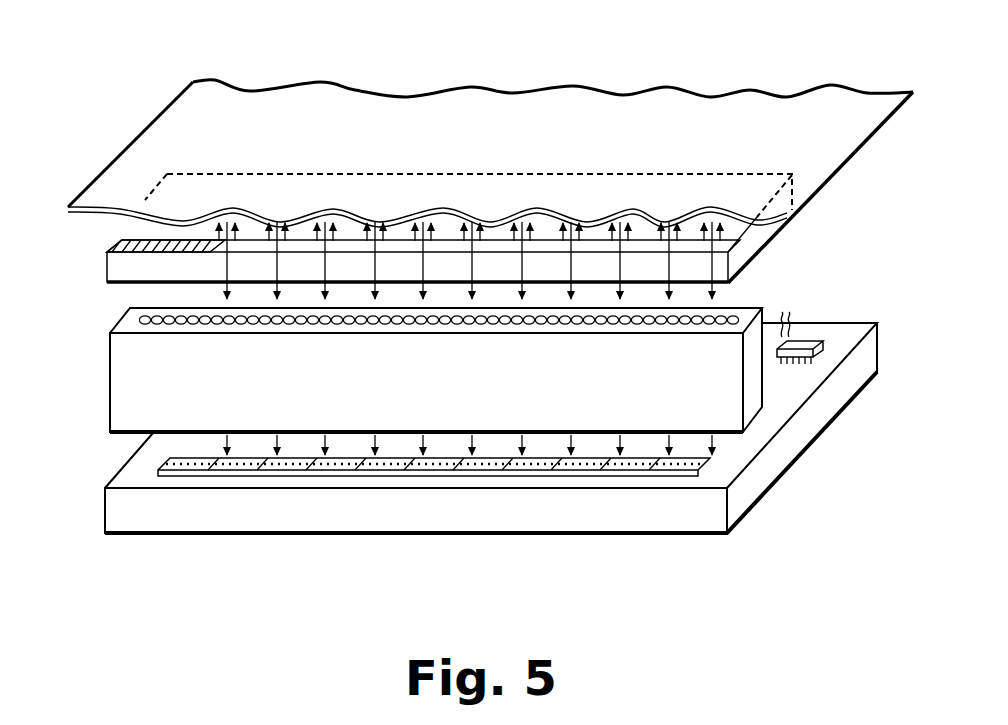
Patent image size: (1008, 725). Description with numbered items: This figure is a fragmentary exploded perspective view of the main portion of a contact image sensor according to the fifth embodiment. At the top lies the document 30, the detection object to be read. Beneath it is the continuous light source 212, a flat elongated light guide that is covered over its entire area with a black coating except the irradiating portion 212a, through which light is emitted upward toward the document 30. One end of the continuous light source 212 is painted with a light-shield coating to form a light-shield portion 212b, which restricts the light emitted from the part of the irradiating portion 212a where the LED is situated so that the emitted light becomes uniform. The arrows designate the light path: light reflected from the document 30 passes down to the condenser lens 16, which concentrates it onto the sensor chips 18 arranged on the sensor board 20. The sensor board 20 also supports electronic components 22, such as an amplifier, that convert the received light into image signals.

The document 30 is at (553, 86).
The continuous light source 212 is at (120, 268).
The irradiating portion 212a is at (722, 246).
The light-shield portion 212b is at (137, 247).
The condenser lens 16 is at (122, 389).
The sensor chips 18 is at (419, 478).
The sensor board 20 is at (634, 534).
The electronic components 22 is at (805, 342).